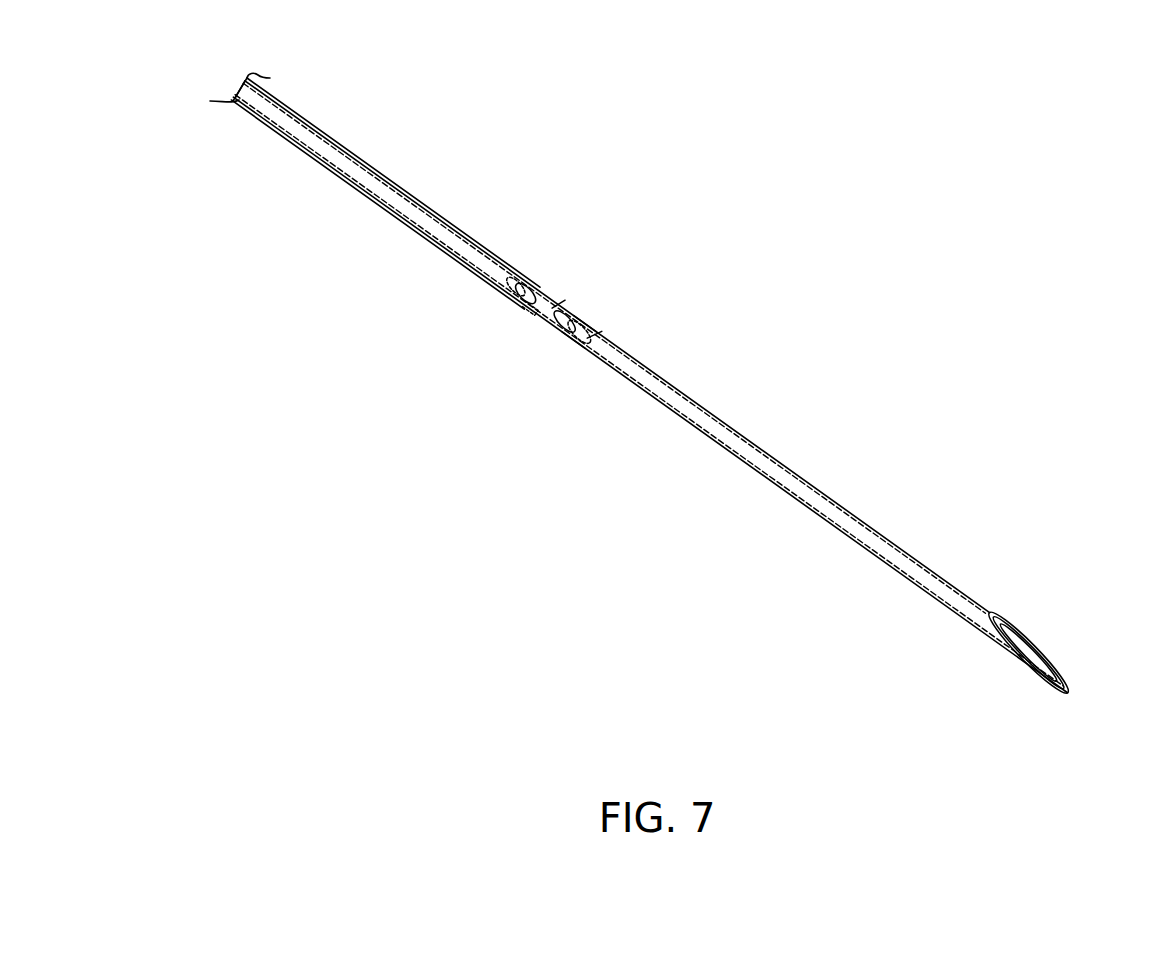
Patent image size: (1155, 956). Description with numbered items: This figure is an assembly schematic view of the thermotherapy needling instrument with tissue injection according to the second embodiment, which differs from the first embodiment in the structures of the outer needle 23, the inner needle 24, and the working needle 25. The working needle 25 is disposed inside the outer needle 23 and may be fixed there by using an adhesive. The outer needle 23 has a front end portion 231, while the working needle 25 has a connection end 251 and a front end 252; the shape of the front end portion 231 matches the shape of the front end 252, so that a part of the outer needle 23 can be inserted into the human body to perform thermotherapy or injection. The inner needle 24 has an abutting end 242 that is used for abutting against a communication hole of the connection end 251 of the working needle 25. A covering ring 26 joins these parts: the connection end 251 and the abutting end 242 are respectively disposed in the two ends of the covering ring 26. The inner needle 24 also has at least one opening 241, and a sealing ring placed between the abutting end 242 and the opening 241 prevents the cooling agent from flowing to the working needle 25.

The outer needle 23 is at (790, 463).
The inner needle 24 is at (343, 153).
The working needle 25 is at (712, 423).
The covering ring 26 is at (538, 332).
The front end portion 231 is at (1073, 687).
The opening 241 is at (531, 278).
The abutting end 242 is at (568, 312).
The connection end 251 is at (598, 323).
The front end 252 is at (1036, 650).